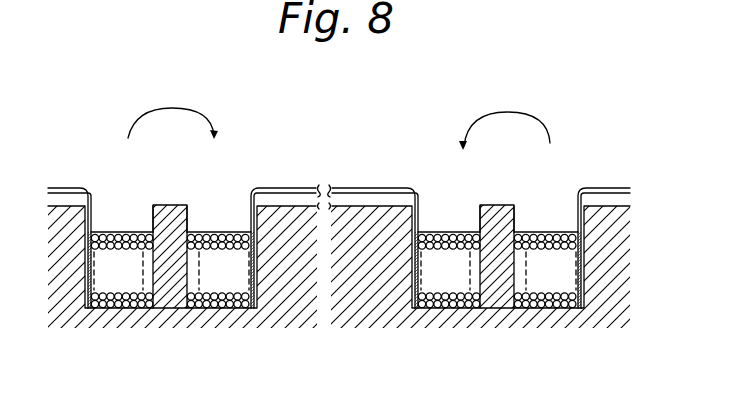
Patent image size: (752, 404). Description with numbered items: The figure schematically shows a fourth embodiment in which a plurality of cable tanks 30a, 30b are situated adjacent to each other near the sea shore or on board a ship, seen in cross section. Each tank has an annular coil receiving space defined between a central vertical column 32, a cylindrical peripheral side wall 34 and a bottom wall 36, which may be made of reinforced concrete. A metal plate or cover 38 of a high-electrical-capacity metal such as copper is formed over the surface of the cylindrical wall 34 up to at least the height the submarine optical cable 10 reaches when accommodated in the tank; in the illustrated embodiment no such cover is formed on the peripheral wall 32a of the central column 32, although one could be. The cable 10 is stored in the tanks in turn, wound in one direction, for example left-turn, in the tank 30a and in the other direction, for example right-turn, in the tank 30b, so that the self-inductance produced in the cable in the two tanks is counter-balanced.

The submarine optical cable 10 is at (259, 297).
The central vertical column 32 is at (175, 205).
The peripheral wall of the central column 32a is at (142, 216).
The cylindrical peripheral side wall 34 is at (91, 214).
The bottom wall 36 is at (126, 309).
The metal cover 38 is at (259, 262).
The cable tank 30a is at (534, 197).
The cable tank 30b is at (204, 194).